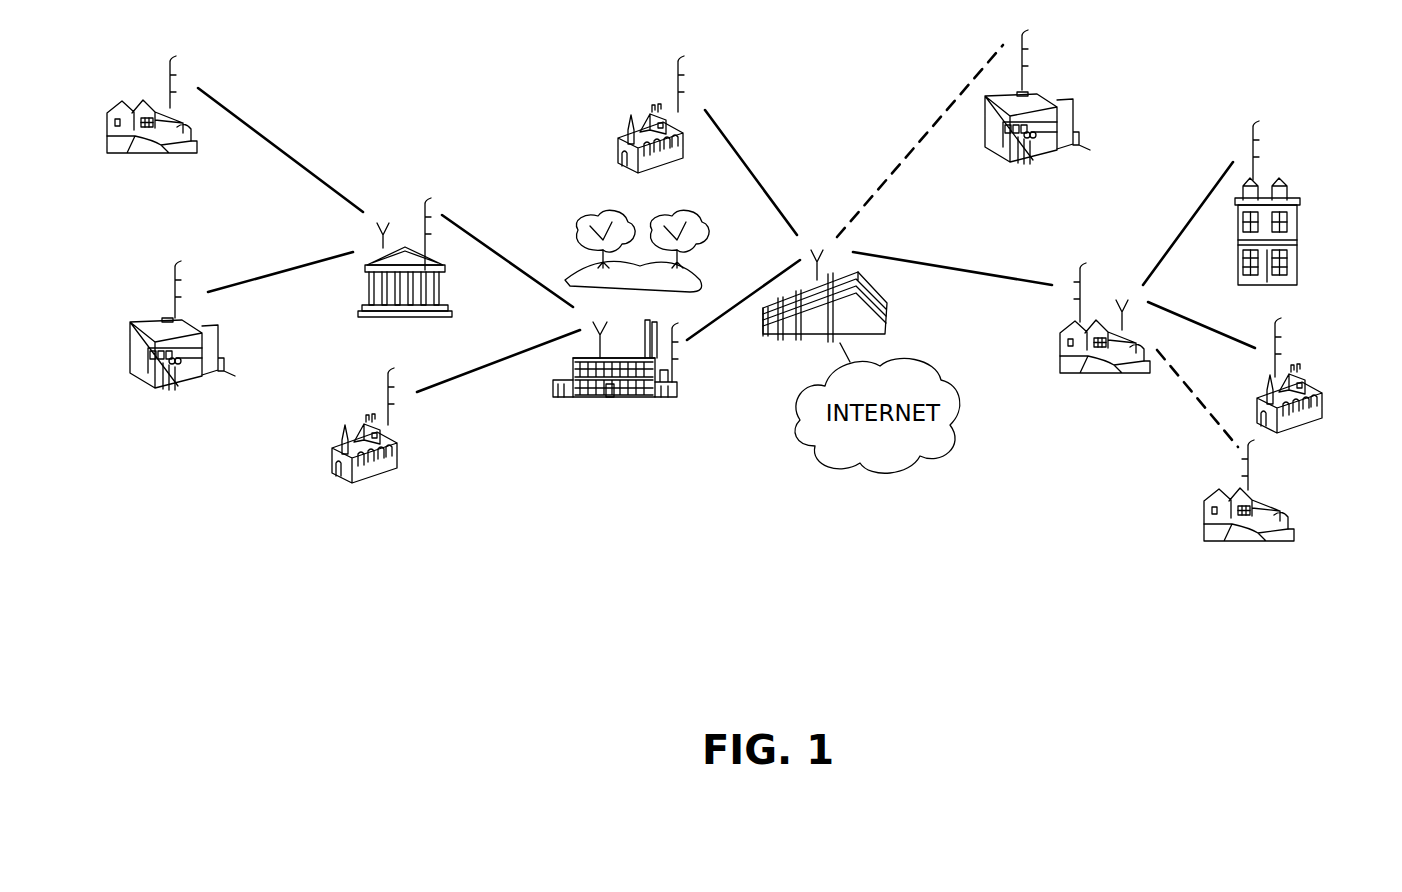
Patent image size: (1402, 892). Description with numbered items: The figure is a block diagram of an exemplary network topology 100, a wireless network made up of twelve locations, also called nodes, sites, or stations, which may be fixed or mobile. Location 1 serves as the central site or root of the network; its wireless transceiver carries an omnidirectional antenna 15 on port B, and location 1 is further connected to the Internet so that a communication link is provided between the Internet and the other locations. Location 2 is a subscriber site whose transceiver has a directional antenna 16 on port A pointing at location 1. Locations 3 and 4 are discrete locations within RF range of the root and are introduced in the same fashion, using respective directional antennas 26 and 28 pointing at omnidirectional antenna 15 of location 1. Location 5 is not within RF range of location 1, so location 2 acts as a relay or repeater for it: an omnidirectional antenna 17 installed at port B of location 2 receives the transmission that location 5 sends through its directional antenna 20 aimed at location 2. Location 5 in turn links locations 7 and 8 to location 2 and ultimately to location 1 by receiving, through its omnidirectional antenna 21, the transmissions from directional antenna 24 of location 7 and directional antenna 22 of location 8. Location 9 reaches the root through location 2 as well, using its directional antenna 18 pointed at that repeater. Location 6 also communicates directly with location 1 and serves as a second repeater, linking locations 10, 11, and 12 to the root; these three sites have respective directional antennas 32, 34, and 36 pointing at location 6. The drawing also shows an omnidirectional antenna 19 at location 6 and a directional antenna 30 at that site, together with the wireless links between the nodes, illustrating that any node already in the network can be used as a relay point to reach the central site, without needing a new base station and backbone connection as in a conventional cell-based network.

The network topology 100 is at (506, 541).
The location (central site / root) 1 is at (887, 302).
The location (subscriber site / repeater) 2 is at (600, 398).
The location 3 is at (618, 152).
The location 4 is at (1022, 165).
The location 5 is at (380, 318).
The location (repeater) 6 is at (1082, 376).
The location 7 is at (135, 153).
The location 8 is at (148, 393).
The location 9 is at (332, 440).
The location 10 is at (1300, 258).
The location 11 is at (1327, 402).
The location 12 is at (1292, 530).
The omnidirectional antenna 15 is at (816, 248).
The directional antenna 16 is at (680, 357).
The omnidirectional antenna 17 is at (583, 318).
The directional antenna 18 is at (393, 402).
The antenna 19 is at (1118, 292).
The directional antenna 20 is at (430, 203).
The omnidirectional antenna 21 is at (384, 218).
The directional antenna 22 is at (180, 266).
The directional antenna 24 is at (175, 63).
The directional antenna 26 is at (683, 64).
The directional antenna 28 is at (1027, 40).
The antenna mast 30 is at (1073, 300).
The directional antenna 32 is at (1258, 130).
The directional antenna 34 is at (1280, 328).
The directional antenna 36 is at (1243, 462).